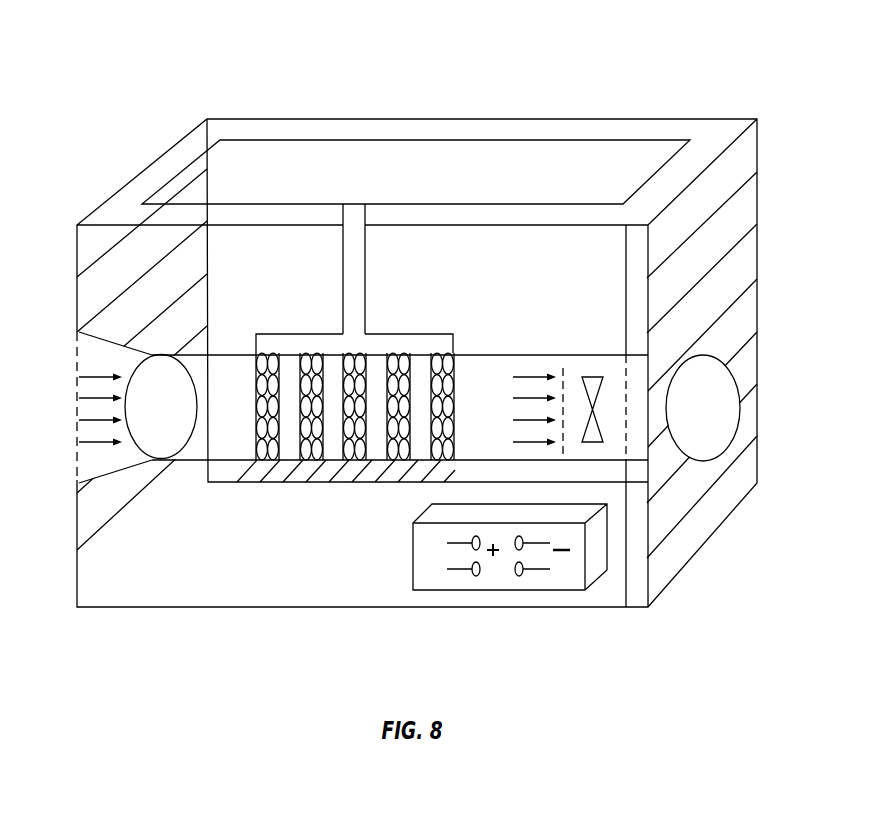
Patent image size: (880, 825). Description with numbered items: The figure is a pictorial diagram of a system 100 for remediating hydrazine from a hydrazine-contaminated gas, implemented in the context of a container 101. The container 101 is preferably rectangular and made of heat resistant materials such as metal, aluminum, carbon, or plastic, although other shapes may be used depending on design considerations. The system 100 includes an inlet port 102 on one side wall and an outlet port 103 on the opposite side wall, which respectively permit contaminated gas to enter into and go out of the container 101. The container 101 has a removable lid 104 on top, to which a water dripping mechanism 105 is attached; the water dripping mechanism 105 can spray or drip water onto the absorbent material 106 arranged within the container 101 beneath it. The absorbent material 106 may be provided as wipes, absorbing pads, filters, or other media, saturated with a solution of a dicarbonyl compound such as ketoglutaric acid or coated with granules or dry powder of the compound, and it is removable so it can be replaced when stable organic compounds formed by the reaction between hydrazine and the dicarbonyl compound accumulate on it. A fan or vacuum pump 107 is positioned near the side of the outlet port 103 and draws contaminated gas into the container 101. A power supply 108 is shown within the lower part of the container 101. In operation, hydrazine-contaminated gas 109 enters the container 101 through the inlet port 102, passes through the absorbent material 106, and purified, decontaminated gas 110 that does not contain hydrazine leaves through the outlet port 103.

The system 100 is at (114, 52).
The container 101 is at (728, 116).
The inlet port 102 is at (128, 466).
The outlet port 103 is at (733, 374).
The removable lid 104 is at (480, 139).
The water dripping mechanism 105 is at (365, 268).
The absorbent material 106 is at (455, 355).
The fan or vacuum pump 107 is at (593, 377).
The power supply 108 is at (413, 545).
The hydrazine-contaminated gas 109 is at (97, 375).
The purified, decontaminated gas 110 is at (525, 420).